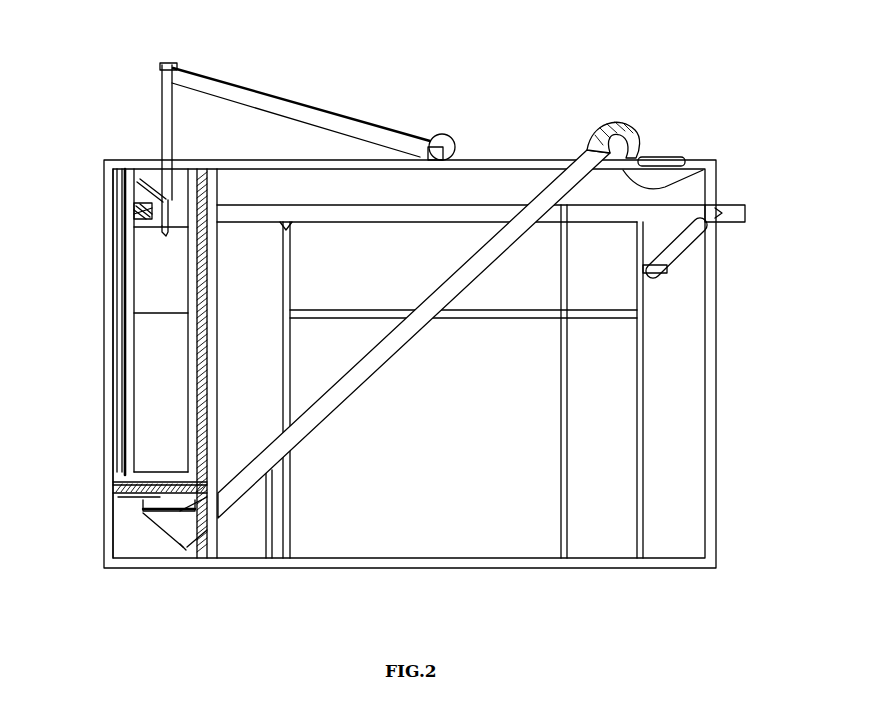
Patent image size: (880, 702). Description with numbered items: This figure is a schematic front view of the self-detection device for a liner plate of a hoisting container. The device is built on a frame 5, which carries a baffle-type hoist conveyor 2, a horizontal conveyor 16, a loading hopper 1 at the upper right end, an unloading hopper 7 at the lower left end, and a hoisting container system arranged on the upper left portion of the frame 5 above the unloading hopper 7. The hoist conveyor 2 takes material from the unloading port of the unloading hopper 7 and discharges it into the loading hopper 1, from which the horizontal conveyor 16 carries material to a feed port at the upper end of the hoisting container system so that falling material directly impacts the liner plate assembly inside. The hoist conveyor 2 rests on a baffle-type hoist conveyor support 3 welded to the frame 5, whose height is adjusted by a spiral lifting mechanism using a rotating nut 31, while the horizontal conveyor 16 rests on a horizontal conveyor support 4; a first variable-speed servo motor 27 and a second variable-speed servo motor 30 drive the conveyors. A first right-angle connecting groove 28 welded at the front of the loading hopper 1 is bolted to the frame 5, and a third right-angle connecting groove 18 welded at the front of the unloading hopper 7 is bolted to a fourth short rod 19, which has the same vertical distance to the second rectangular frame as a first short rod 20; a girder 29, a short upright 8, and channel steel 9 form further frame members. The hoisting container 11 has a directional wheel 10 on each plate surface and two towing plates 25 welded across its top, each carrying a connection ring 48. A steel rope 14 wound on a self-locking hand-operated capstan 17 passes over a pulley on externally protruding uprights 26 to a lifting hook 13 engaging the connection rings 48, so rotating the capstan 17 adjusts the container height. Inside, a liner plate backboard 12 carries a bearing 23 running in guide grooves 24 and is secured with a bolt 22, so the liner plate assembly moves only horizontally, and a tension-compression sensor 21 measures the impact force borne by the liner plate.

The loading hopper 1 is at (714, 163).
The baffle-type hoist conveyor 2 is at (217, 506).
The baffle-type hoist conveyor support 3 is at (568, 365).
The horizontal conveyor support 4 is at (640, 270).
The frame 5 is at (715, 567).
The unloading hopper 7 is at (180, 522).
The short upright 8 is at (125, 433).
The channel steel 9 is at (113, 400).
The directional wheel 10 is at (125, 308).
The hoisting container 11 is at (138, 263).
The liner plate backboard 12 is at (130, 226).
The lifting hook 13 is at (162, 200).
The steel rope 14 is at (160, 66).
The horizontal conveyor 16 is at (703, 208).
The hand-operated capstan 17 is at (172, 83).
The third right-angle connecting groove 18 is at (165, 511).
The fourth short rod 19 is at (150, 497).
The first short rod 20 is at (140, 492).
The tension-compression sensor 21 is at (125, 240).
The bolt 22 is at (140, 213).
The bearing 23 is at (145, 216).
The guide groove 24 is at (147, 215).
The towing plate 25 is at (147, 213).
The externally protruding upright 26 is at (160, 103).
The first variable-speed servo motor 27 is at (623, 127).
The first right-angle connecting groove 28 is at (660, 158).
The girder 29 is at (697, 162).
The second variable-speed servo motor 30 is at (667, 268).
The rotating nut 31 is at (643, 280).
The connection ring 48 is at (140, 207).